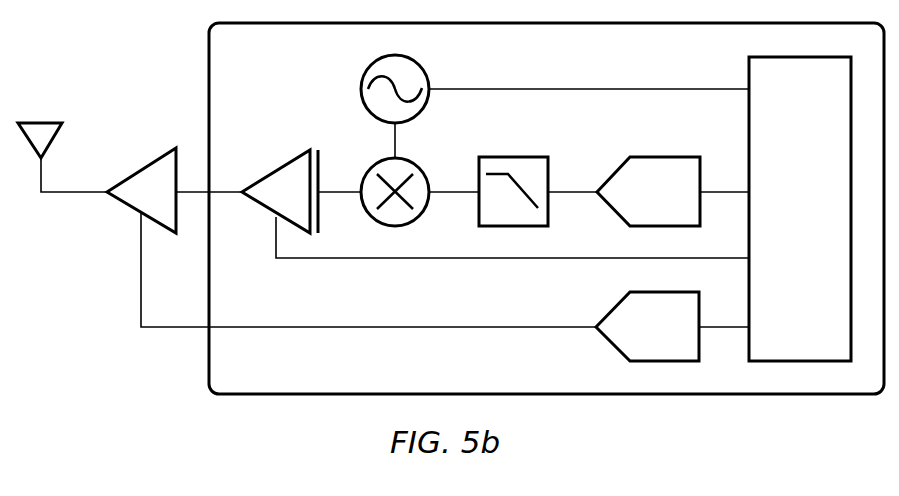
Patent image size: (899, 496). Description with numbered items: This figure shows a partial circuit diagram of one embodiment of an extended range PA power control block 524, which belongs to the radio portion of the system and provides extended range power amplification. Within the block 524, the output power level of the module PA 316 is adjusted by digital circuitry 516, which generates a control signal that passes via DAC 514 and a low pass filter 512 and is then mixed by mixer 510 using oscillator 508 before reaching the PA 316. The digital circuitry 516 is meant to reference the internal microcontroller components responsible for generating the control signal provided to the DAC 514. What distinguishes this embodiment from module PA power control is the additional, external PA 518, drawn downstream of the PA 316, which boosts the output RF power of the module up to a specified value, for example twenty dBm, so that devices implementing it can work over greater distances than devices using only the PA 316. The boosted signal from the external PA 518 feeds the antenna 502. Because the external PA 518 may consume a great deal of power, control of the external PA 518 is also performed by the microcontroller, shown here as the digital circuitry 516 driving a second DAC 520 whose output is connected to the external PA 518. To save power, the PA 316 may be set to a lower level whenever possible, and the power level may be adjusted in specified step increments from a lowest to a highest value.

The antenna 502 is at (42, 123).
The external PA 518 is at (140, 170).
The extended range PA power control block 524 is at (262, 48).
The PA 316 is at (278, 165).
The oscillator 508 is at (370, 62).
The mixer 510 is at (370, 162).
The Low Pass Filter (LPF) 512 is at (505, 157).
The DAC 514 is at (655, 157).
The digital-to-analog converter 520 is at (612, 305).
The digital circuitry 516 is at (818, 356).